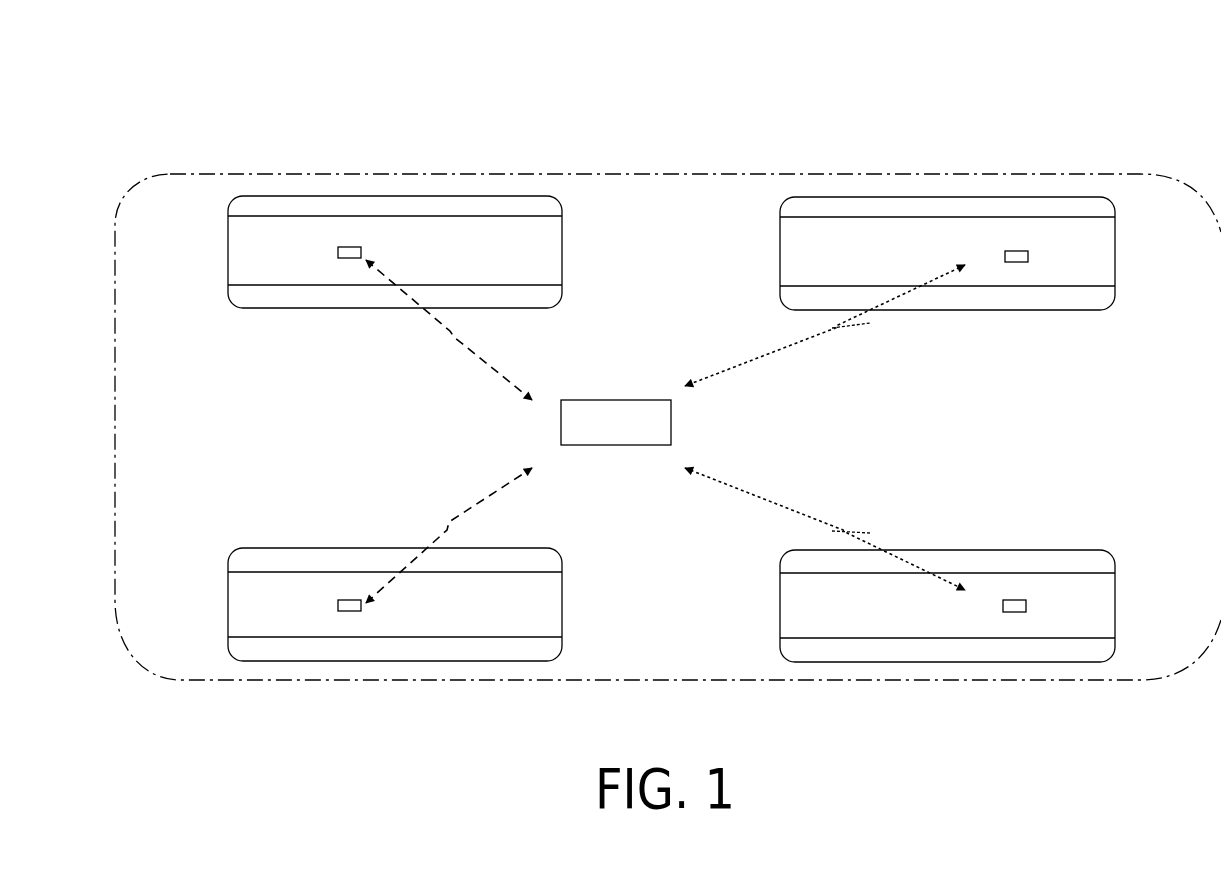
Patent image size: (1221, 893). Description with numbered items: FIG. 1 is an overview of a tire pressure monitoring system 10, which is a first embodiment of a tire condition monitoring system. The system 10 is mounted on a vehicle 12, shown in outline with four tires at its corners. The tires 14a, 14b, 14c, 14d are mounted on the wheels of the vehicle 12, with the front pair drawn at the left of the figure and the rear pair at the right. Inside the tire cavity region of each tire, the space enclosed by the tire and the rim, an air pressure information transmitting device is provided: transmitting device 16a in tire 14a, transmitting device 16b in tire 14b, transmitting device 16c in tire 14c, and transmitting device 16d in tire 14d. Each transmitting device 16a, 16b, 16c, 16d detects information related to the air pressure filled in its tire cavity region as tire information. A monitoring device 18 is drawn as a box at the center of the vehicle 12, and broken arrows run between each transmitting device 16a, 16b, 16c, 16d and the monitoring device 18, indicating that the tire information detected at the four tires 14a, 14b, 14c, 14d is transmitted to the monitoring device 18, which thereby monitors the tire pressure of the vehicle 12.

The tire pressure monitoring system 10 is at (586, 88).
The vehicle 12 is at (614, 173).
The tire 14a is at (395, 196).
The tire 14b is at (395, 661).
The tire 14c is at (960, 197).
The tire 14d is at (940, 662).
The air pressure information transmitting device 16a is at (348, 247).
The air pressure information transmitting device 16b is at (348, 611).
The air pressure information transmitting device 16c is at (1018, 251).
The air pressure information transmitting device 16d is at (1015, 612).
The monitoring device 18 is at (615, 445).